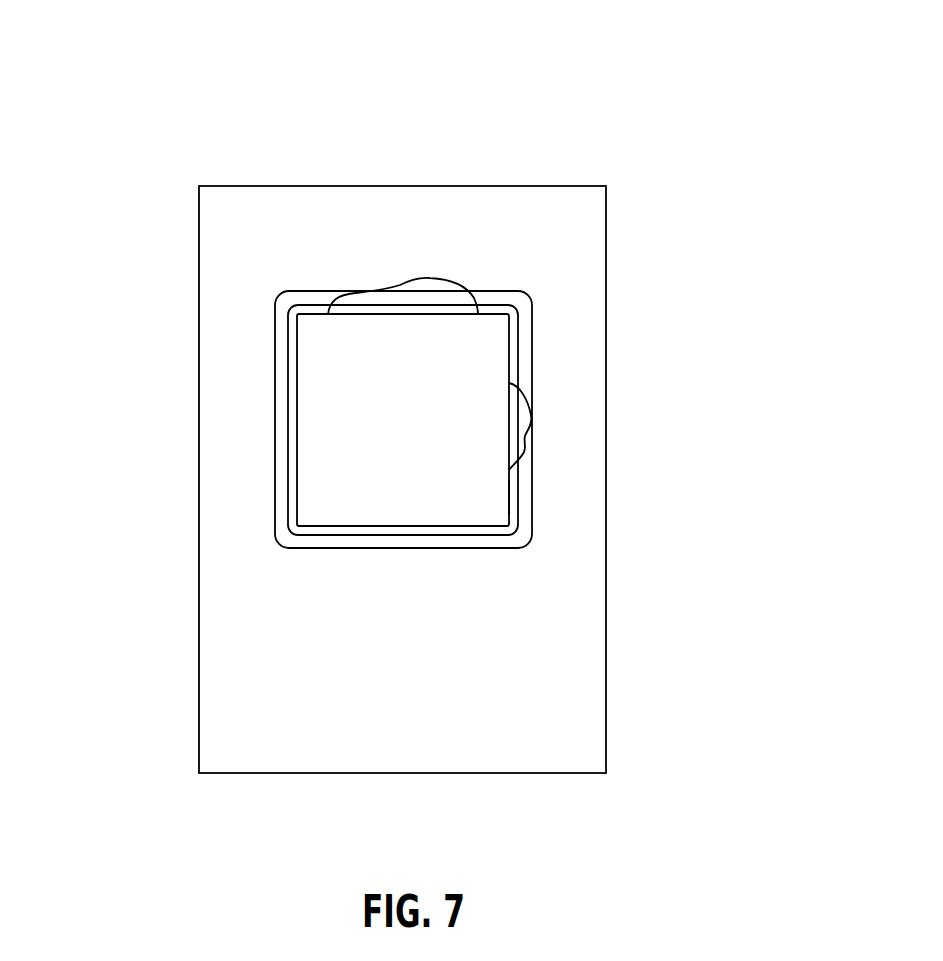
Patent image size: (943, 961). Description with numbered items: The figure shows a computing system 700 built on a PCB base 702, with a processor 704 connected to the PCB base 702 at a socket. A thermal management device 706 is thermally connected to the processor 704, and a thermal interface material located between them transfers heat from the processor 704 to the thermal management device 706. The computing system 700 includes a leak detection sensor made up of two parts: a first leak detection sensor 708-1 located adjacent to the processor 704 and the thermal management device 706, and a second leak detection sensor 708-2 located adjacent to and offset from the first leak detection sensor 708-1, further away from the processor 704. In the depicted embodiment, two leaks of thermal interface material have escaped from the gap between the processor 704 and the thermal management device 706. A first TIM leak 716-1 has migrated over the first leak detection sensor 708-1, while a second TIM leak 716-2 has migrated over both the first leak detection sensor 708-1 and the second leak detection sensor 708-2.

The computing system 700 is at (740, 65).
The PCB base 702 is at (578, 274).
The processor 704 is at (520, 497).
The thermal management device 706 is at (468, 361).
The first leak detection sensor 708-1 is at (275, 330).
The second leak detection sensor 708-2 is at (266, 407).
The first TIM leak 716-1 is at (522, 420).
The second TIM leak 716-2 is at (403, 293).